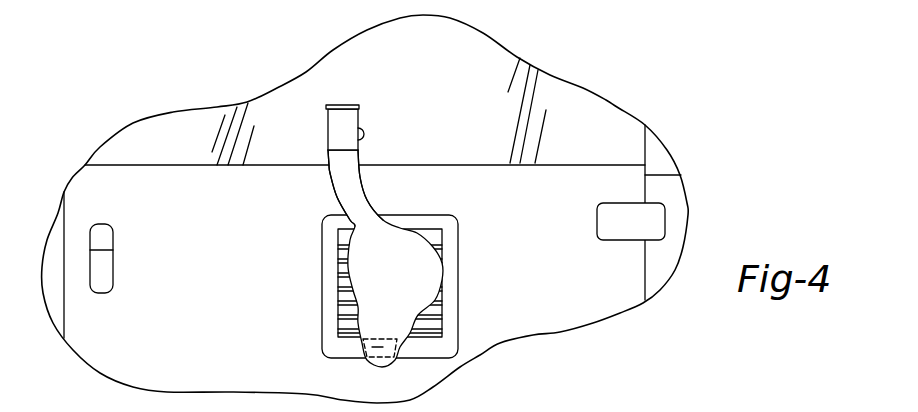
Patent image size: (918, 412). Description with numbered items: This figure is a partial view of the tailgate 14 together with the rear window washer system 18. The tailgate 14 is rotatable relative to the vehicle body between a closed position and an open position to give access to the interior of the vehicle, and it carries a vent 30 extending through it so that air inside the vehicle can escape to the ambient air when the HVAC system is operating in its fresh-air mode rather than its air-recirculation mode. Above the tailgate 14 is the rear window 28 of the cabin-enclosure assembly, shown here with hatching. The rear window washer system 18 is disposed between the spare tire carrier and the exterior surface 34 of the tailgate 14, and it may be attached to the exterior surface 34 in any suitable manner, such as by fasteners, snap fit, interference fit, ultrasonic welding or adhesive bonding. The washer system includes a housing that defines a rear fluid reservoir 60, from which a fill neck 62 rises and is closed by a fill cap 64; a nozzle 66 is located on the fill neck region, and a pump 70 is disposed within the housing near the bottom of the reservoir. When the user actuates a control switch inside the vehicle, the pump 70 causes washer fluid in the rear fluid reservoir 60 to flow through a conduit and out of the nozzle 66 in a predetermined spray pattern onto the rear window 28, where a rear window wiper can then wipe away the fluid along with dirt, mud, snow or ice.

The tailgate 14 is at (65, 247).
The rear window washer system 18 is at (442, 280).
The rear window 28 is at (425, 63).
The vent 30 is at (325, 315).
The exterior surface 34 is at (154, 341).
The rear fluid reservoir 60 is at (425, 267).
The fill neck 62 is at (360, 187).
The fill cap 64 is at (338, 105).
The nozzle 66 is at (364, 134).
The pump 70 is at (363, 341).